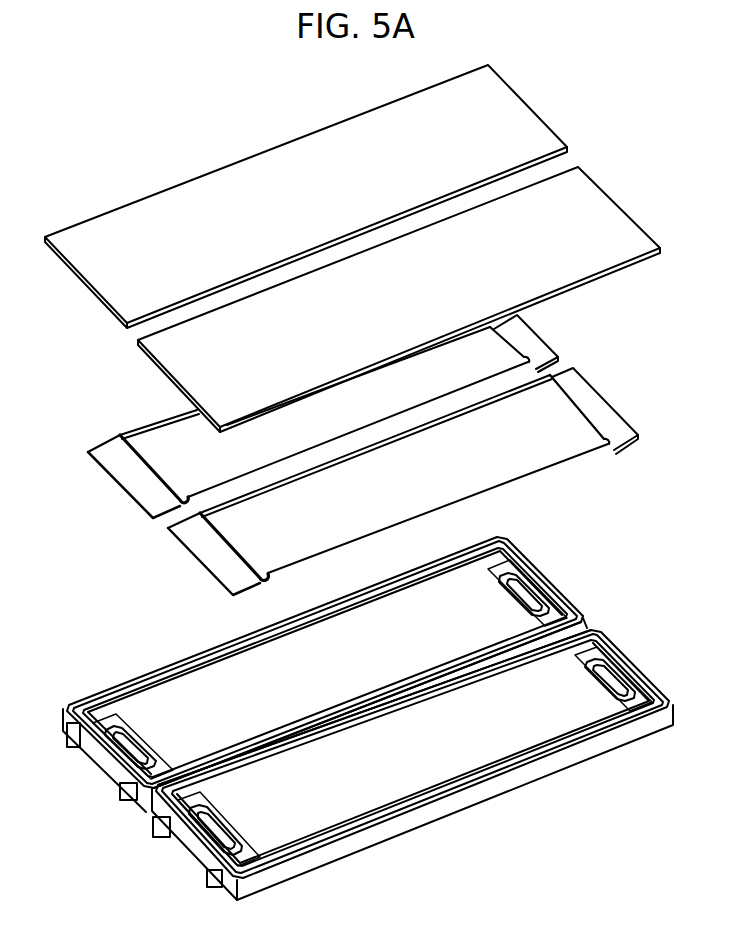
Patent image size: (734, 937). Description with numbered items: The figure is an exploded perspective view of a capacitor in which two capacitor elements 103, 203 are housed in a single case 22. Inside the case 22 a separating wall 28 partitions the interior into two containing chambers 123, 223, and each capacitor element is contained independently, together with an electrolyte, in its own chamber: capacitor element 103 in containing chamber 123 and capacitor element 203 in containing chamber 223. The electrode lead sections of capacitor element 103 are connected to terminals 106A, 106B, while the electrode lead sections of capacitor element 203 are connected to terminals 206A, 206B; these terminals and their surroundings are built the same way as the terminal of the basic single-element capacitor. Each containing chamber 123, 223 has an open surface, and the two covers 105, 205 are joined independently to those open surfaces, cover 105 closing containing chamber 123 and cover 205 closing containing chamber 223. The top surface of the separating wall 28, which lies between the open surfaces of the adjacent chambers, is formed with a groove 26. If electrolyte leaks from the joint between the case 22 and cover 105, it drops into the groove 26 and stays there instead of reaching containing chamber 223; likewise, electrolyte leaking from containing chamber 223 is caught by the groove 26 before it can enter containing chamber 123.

The case 22 is at (98, 698).
The groove 26 is at (283, 737).
The separating wall 28 is at (370, 725).
The capacitor element 103 is at (275, 555).
The cover 105 is at (608, 262).
The terminal 106A is at (185, 848).
The terminal 106B is at (610, 687).
The containing chamber 123 is at (480, 760).
The capacitor element 203 is at (150, 437).
The cover 205 is at (112, 225).
The terminal 206A is at (105, 762).
The terminal 206B is at (520, 595).
The containing chamber 223 is at (197, 692).